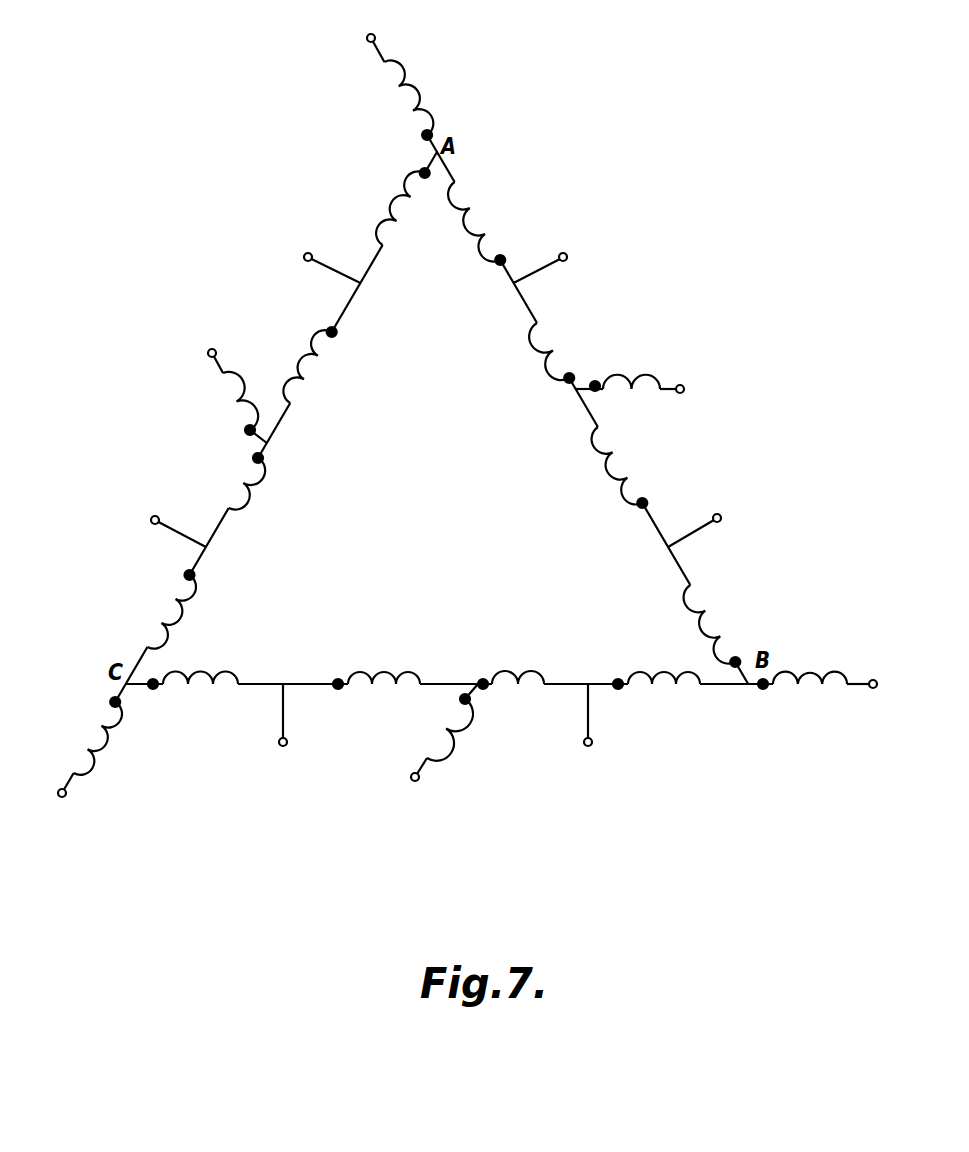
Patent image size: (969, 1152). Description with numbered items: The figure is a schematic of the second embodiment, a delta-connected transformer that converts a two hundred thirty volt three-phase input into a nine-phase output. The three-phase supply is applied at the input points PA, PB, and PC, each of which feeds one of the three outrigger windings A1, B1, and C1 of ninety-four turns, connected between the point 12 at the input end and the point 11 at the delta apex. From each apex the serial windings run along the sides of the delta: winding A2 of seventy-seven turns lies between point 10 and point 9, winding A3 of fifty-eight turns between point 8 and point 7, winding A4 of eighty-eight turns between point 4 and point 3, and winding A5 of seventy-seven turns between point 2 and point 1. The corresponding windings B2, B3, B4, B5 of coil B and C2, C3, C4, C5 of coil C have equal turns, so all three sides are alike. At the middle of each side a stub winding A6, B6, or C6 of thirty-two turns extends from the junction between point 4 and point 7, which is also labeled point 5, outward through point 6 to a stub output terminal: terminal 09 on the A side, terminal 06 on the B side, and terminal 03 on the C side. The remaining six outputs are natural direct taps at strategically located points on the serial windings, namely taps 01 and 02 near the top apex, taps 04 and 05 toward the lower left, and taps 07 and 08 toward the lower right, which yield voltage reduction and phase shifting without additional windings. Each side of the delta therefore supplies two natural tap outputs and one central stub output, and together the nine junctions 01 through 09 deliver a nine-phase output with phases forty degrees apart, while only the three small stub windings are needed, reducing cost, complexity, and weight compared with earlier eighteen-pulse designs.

The outrigger winding of coil A A1 is at (398, 97).
The serial winding A2 is at (472, 222).
The serial winding A3 is at (545, 351).
The serial winding A4 is at (610, 465).
The serial winding A5 is at (699, 624).
The stub winding of the A side A6 is at (227, 406).
The outrigger winding of coil B B1 is at (810, 680).
The serial winding B2 is at (664, 682).
The serial winding B3 is at (520, 680).
The serial winding B4 is at (384, 680).
The serial winding B5 is at (200, 680).
The stub winding of the B side B6 is at (624, 384).
The outrigger winding of coil C C1 is at (109, 738).
The serial winding C2 is at (183, 612).
The serial winding C3 is at (257, 484).
The serial winding C4 is at (323, 366).
The serial winding C5 is at (411, 215).
The stub winding of the C side C6 is at (453, 722).
The input point PA is at (364, 34).
The input point PB is at (866, 671).
The input point PC is at (56, 801).
The output tap 01 is at (560, 257).
The output tap 02 is at (320, 258).
The output terminal 03 is at (205, 347).
The output tap 04 is at (164, 523).
The output tap 05 is at (286, 728).
The output terminal 06 is at (411, 785).
The output tap 07 is at (588, 728).
The output tap 08 is at (712, 522).
The output terminal 09 is at (693, 388).
The point 1 is at (452, 435).
The point 2 is at (470, 472).
The point 3 is at (487, 510).
The point 4 is at (444, 551).
The point 5 is at (423, 547).
The point 6 is at (436, 571).
The point 7 is at (412, 536).
The point 8 is at (382, 502).
The point 9 is at (398, 472).
The point 10 is at (427, 434).
The point 11 is at (440, 412).
The point 12 is at (465, 405).